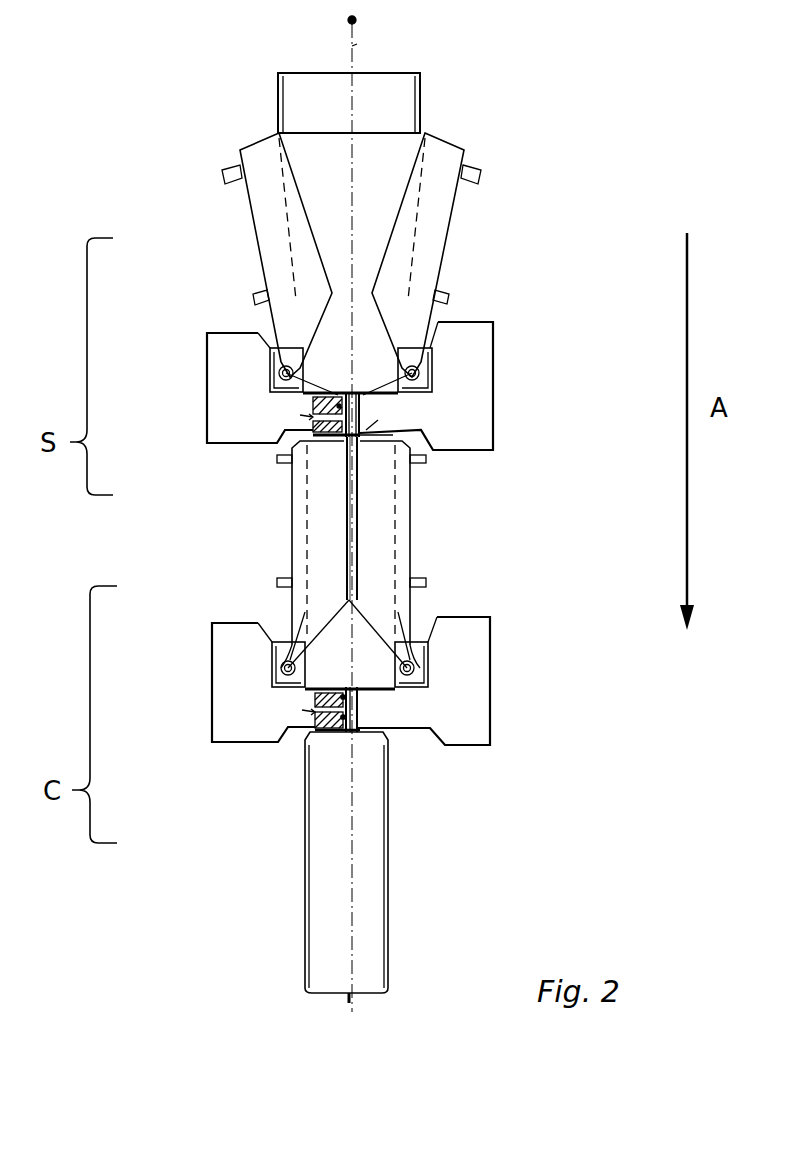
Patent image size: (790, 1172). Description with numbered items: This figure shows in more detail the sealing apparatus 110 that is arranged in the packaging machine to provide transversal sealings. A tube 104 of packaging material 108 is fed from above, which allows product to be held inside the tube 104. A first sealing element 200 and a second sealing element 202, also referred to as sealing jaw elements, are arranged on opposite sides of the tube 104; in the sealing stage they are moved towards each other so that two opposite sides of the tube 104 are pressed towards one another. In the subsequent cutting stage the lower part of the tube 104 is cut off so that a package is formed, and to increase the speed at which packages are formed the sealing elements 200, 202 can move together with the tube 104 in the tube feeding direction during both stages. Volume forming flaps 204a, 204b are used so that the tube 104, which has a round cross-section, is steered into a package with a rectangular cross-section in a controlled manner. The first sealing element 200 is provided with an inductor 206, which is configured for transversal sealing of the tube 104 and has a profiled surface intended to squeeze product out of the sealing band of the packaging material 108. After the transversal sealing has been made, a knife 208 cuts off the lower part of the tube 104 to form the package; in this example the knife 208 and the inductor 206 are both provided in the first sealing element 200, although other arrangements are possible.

The tube 104 is at (405, 116).
The volume forming flap 204a is at (243, 158).
The volume forming flap 204b is at (448, 160).
The sealing apparatus 110 is at (181, 258).
The first sealing element 200 is at (250, 428).
The second sealing element 202 is at (484, 428).
The inductor 206 is at (342, 698).
The knife 208 is at (313, 717).
The packaging material 108 is at (375, 870).